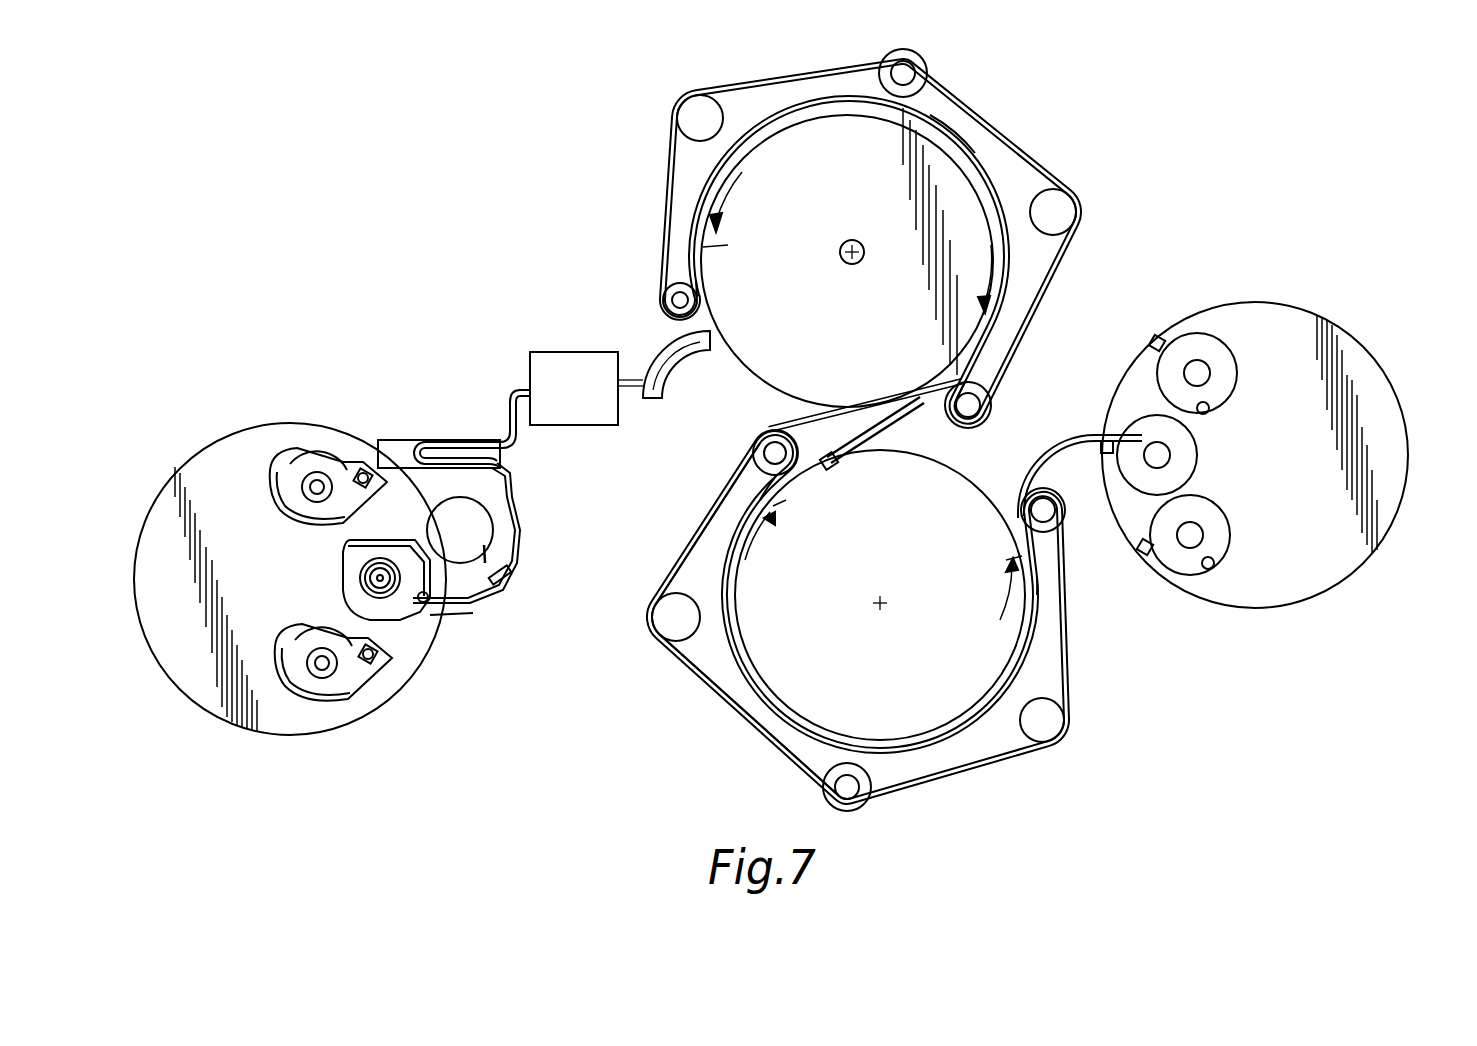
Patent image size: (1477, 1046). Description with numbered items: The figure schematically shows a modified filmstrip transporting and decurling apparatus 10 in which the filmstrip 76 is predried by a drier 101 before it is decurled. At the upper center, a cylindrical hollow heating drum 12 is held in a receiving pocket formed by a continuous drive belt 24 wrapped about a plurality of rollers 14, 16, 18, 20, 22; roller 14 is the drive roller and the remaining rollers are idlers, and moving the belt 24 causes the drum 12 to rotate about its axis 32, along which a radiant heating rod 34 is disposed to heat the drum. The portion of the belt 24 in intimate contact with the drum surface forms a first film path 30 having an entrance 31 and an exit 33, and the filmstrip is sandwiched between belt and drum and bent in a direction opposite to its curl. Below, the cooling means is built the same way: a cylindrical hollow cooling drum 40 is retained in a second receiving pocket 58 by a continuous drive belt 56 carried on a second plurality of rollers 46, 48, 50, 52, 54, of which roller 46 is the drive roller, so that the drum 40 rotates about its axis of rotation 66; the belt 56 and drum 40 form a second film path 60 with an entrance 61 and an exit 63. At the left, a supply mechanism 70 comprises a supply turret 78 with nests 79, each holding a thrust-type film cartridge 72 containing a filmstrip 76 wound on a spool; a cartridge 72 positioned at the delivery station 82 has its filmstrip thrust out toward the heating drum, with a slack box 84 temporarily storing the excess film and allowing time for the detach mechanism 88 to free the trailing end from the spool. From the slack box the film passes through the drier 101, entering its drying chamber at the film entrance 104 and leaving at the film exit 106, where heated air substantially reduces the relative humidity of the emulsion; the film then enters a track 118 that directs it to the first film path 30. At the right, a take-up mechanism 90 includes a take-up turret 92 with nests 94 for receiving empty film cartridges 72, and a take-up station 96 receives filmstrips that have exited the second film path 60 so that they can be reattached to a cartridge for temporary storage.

The mechanism 10 is at (1222, 98).
The cylindrical hollow heating drum 12 is at (988, 162).
The drive roller 14 is at (668, 300).
The idler roller 16 is at (678, 118).
The idler roller 18 is at (920, 78).
The idler roller 20 is at (1076, 215).
The idler roller 22 is at (960, 410).
The continuous drive belt 24 is at (795, 106).
The first film path 30 is at (955, 125).
The entrance 31 is at (703, 300).
The axis 32 is at (858, 262).
The exit 33 is at (968, 372).
The radiant heating rod 34 is at (842, 246).
The cylindrical hollow cooling drum 40 is at (955, 460).
The drive roller 46 is at (765, 462).
The roller 48 is at (663, 617).
The roller 50 is at (845, 788).
The roller 52 is at (1056, 738).
The roller 54 is at (1062, 530).
The continuous drive belt 56 is at (1068, 655).
The second receiving pocket 58 is at (760, 720).
The second film path 60 is at (737, 667).
The entrance 61 is at (786, 490).
The exit 63 is at (1018, 535).
The axis of rotation 66 is at (884, 603).
The supply mechanism 70 is at (205, 443).
The film cartridge 72 is at (366, 542).
The filmstrip 76 is at (318, 494).
The supply turret 78 is at (240, 440).
The nest 79 is at (300, 455).
The delivery station 82 is at (477, 624).
The slack box 84 is at (380, 430).
The detach mechanism 88 is at (480, 512).
The take-up mechanism 90 is at (1310, 262).
The take-up turret 92 is at (1355, 320).
The nest 94 is at (1207, 408).
The take-up station 96 is at (1040, 436).
The drier 101 is at (545, 350).
The film entrance 104 is at (525, 390).
The film exit 106 is at (643, 398).
The track 118 is at (664, 352).